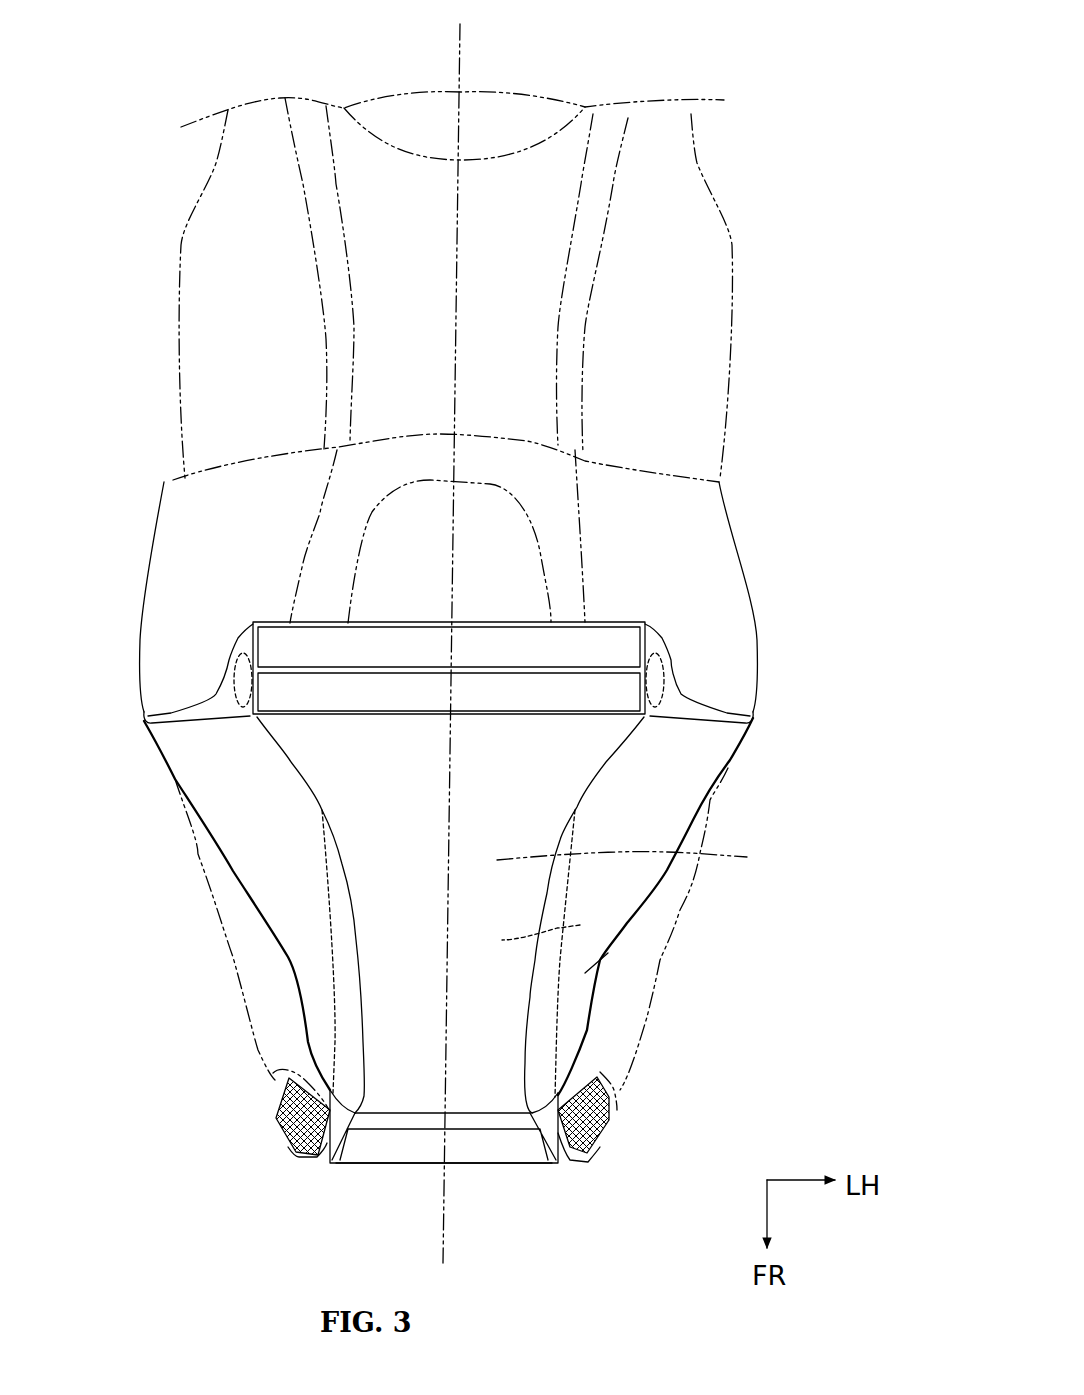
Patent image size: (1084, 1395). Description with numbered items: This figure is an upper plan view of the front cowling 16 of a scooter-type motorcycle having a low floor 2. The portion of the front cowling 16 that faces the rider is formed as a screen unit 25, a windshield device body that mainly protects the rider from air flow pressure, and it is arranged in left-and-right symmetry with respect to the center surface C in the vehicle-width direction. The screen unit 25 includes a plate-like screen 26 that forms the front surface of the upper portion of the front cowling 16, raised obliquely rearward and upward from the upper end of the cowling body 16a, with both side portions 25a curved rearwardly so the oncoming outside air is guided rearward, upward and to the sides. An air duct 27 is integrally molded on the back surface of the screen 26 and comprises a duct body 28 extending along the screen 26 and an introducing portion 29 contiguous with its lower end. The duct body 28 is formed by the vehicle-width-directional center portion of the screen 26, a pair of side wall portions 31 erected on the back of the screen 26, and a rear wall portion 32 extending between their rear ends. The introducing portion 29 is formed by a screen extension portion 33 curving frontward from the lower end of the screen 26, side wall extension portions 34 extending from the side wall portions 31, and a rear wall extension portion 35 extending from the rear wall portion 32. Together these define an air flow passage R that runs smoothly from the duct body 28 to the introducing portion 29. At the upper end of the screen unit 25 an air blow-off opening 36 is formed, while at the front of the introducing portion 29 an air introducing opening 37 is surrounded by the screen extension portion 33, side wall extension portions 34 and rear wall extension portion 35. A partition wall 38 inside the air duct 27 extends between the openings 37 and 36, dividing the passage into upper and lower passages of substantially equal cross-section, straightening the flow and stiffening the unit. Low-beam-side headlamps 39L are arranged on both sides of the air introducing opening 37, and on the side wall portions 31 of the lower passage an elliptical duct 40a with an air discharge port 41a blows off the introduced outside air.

The center surface C is at (468, 60).
The low floor 2 is at (722, 207).
The screen unit 25 is at (664, 619).
The side portions 25a is at (226, 834).
The screen 26 is at (545, 775).
The air duct 27 is at (712, 958).
The duct body 28 is at (557, 847).
The introducing portion 29 is at (555, 1103).
The side wall portions 31 is at (342, 878).
The rear wall portion 32 is at (561, 928).
The screen extension portion 33 is at (430, 1098).
The side wall extension portions 34 is at (333, 1137).
The rear wall extension portion 35 is at (453, 1185).
The air blow-off opening 36 is at (585, 642).
The air introducing opening 37 is at (478, 1150).
The partition wall 38 is at (513, 1137).
The low-beam-side headlamps 39L is at (295, 1157).
The duct 40a is at (659, 677).
The air discharge port 41a is at (566, 661).
The front cowling 16 is at (515, 929).
The cowling body 16a is at (680, 913).
The air flow passage R is at (637, 860).